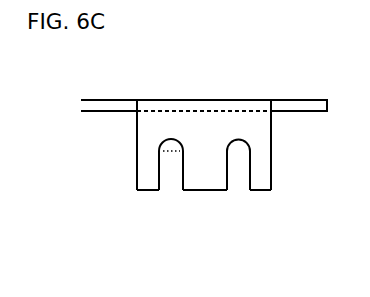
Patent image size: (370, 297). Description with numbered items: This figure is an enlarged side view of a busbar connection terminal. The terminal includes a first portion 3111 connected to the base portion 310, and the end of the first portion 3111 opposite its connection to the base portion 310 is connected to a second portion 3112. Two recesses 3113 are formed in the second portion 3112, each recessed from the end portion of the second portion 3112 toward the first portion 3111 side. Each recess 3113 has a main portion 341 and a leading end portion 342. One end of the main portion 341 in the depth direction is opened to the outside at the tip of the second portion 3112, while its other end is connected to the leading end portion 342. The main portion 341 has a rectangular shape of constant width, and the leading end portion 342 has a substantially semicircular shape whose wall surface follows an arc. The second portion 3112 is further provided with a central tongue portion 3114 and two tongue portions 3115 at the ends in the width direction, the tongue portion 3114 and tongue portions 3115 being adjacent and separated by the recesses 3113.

The base portion 310 is at (313, 105).
The first portion 3111 is at (205, 100).
The second portion 3112 is at (271, 136).
The recess 3113 is at (124, 235).
The tongue portion 3114 is at (203, 192).
The tongue portion 3115 is at (131, 163).
The main portion 341 is at (158, 179).
The leading end portion 342 is at (165, 150).